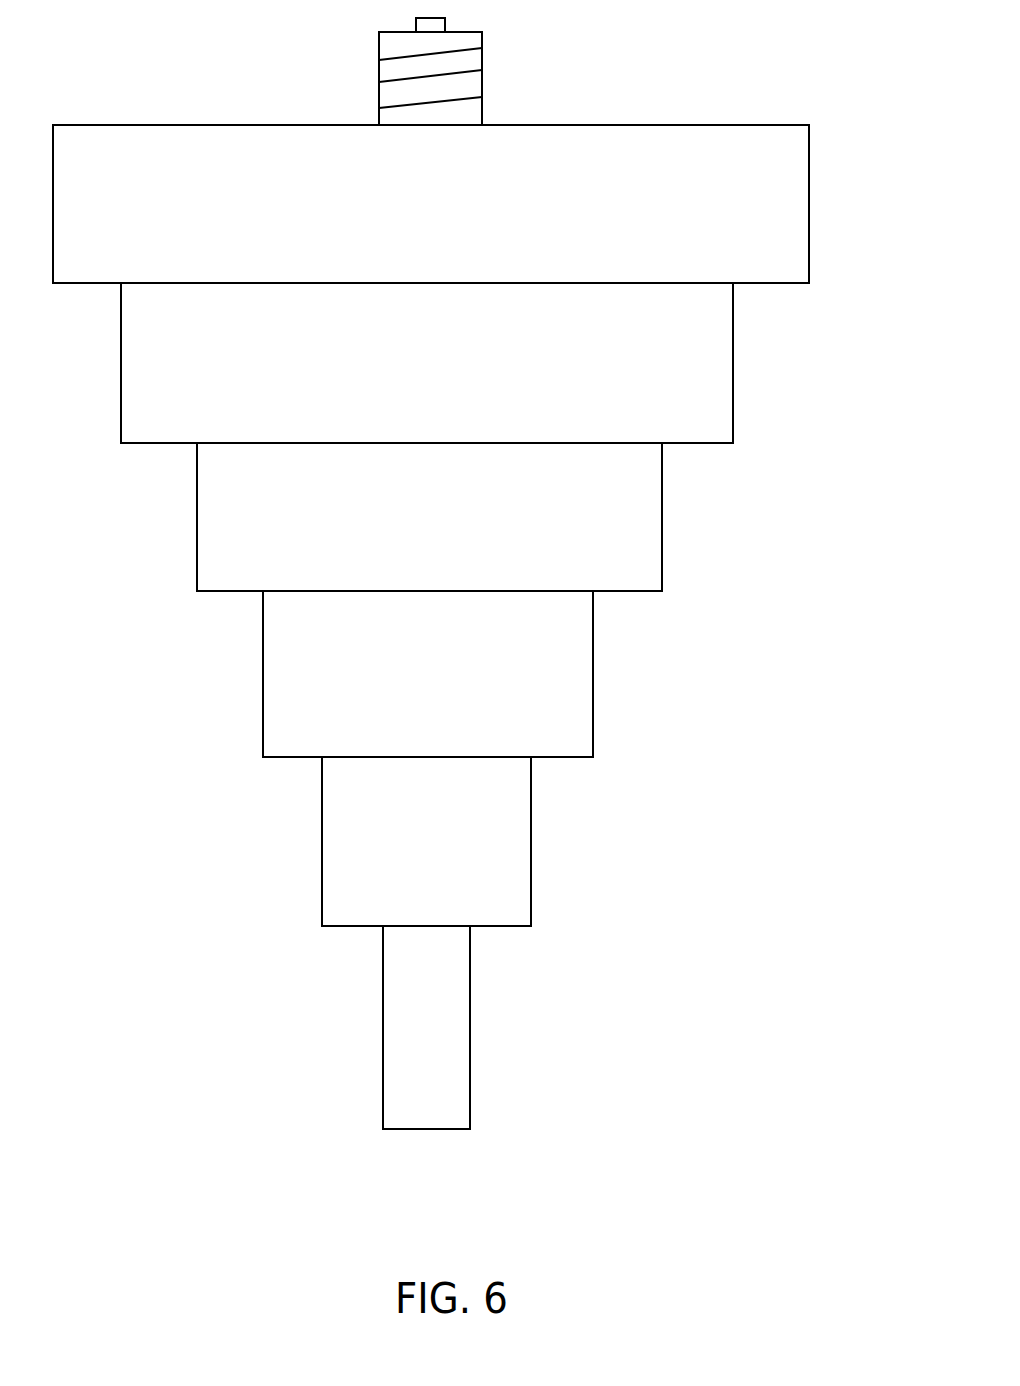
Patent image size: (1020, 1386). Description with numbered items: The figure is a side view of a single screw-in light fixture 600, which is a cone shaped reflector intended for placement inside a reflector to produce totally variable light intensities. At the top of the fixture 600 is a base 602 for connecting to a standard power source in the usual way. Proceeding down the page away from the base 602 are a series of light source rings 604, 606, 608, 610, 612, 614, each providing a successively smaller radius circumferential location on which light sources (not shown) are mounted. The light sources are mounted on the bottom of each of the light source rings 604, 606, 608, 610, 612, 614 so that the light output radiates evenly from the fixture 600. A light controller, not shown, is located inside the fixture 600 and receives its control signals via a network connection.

The light fixture 600 is at (233, 1030).
The base 602 is at (475, 62).
The light source ring 604 is at (780, 283).
The light source ring 606 is at (715, 443).
The light source ring 608 is at (642, 591).
The light source ring 610 is at (560, 757).
The light source ring 612 is at (500, 926).
The light source ring 614 is at (453, 1129).